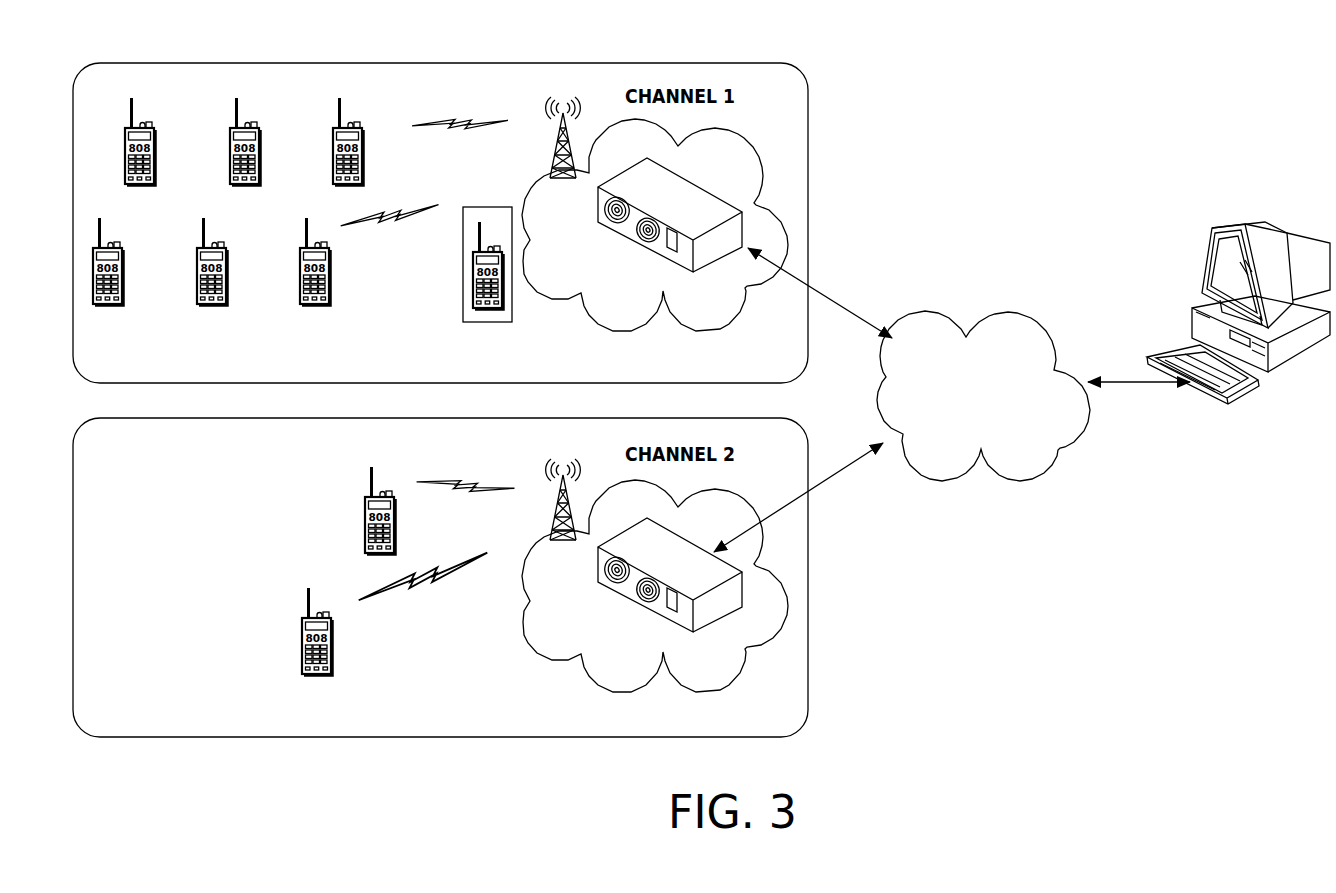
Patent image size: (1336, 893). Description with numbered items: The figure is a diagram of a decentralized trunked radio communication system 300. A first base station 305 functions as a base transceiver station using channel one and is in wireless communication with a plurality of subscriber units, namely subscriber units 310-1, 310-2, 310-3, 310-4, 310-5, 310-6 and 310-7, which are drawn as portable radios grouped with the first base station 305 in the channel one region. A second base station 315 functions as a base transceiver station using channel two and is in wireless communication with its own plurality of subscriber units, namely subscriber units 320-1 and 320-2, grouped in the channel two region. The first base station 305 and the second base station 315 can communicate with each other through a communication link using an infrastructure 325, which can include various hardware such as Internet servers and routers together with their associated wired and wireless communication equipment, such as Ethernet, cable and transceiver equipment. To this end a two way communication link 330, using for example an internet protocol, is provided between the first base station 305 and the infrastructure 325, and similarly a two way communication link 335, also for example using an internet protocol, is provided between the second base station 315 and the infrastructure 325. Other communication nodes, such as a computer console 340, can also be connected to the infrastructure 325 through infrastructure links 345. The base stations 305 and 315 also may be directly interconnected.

The decentralized trunked radio communication system 300 is at (1180, 88).
The first base station 305 is at (534, 121).
The subscriber unit 310-1 is at (490, 308).
The subscriber unit 310-2 is at (139, 184).
The subscriber unit 310-3 is at (244, 184).
The subscriber unit 310-4 is at (364, 157).
The subscriber unit 310-5 is at (107, 304).
The subscriber unit 310-6 is at (211, 304).
The subscriber unit 310-7 is at (314, 304).
The second base station 315 is at (539, 488).
The subscriber unit 320-1 is at (364, 525).
The subscriber unit 320-2 is at (301, 645).
The infrastructure 325 is at (1043, 313).
The two way communication link 330 is at (834, 302).
The two way communication link 335 is at (834, 479).
The computer console 340 is at (1208, 228).
The infrastructure links 345 is at (1138, 386).